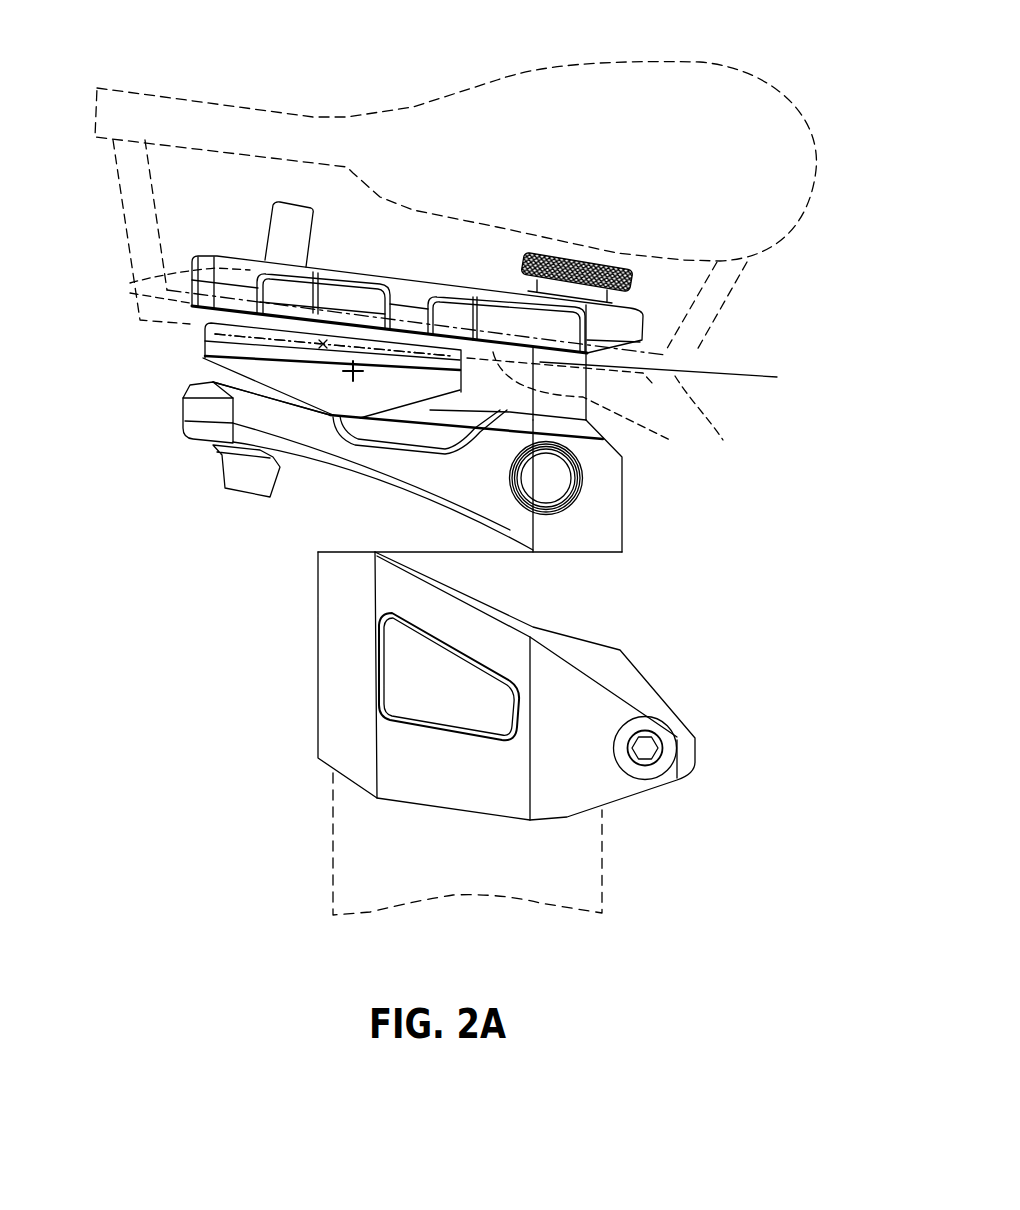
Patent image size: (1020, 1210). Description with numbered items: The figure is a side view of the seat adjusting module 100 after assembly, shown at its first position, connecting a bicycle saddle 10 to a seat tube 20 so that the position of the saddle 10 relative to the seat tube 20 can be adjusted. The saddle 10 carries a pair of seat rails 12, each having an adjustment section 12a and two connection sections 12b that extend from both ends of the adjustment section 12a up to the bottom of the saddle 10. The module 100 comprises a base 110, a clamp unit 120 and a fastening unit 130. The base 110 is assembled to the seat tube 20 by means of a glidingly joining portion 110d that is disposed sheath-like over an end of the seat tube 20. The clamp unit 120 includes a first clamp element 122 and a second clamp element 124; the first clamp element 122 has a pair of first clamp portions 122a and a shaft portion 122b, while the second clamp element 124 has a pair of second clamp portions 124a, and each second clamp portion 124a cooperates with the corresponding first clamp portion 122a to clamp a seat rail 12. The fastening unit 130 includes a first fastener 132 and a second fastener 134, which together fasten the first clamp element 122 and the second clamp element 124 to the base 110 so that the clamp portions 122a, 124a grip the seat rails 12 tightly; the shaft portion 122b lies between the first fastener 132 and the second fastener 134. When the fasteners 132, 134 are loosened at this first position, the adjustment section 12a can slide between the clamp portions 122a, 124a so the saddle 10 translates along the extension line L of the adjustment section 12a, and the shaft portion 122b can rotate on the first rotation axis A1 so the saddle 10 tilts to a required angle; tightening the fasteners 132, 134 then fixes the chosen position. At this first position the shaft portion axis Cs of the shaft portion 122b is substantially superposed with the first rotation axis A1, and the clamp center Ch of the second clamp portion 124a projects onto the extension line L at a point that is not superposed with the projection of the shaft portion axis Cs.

The saddle 10 is at (588, 107).
The seat rails 12 is at (436, 370).
The adjustment section 12a is at (587, 412).
The connection sections 12b is at (140, 221).
The seat tube 20 is at (345, 832).
The seat adjusting module 100 is at (221, 915).
The base 110 is at (323, 527).
The glidingly joining portion 110d is at (343, 661).
The clamp unit 120 is at (346, 335).
The first clamp element 122 is at (197, 357).
The first clamp portions 122a is at (200, 330).
The shaft portion 122b is at (257, 386).
The second clamp element 124 is at (190, 282).
The second clamp portions 124a is at (238, 292).
The fastening unit 130 is at (341, 355).
The first fastener 132 is at (250, 483).
The second fastener 134 is at (553, 253).
The first rotation axis A1 is at (337, 412).
The shaft portion axis Cs is at (342, 391).
The clamp center Ch is at (370, 386).
The extension line L is at (765, 384).